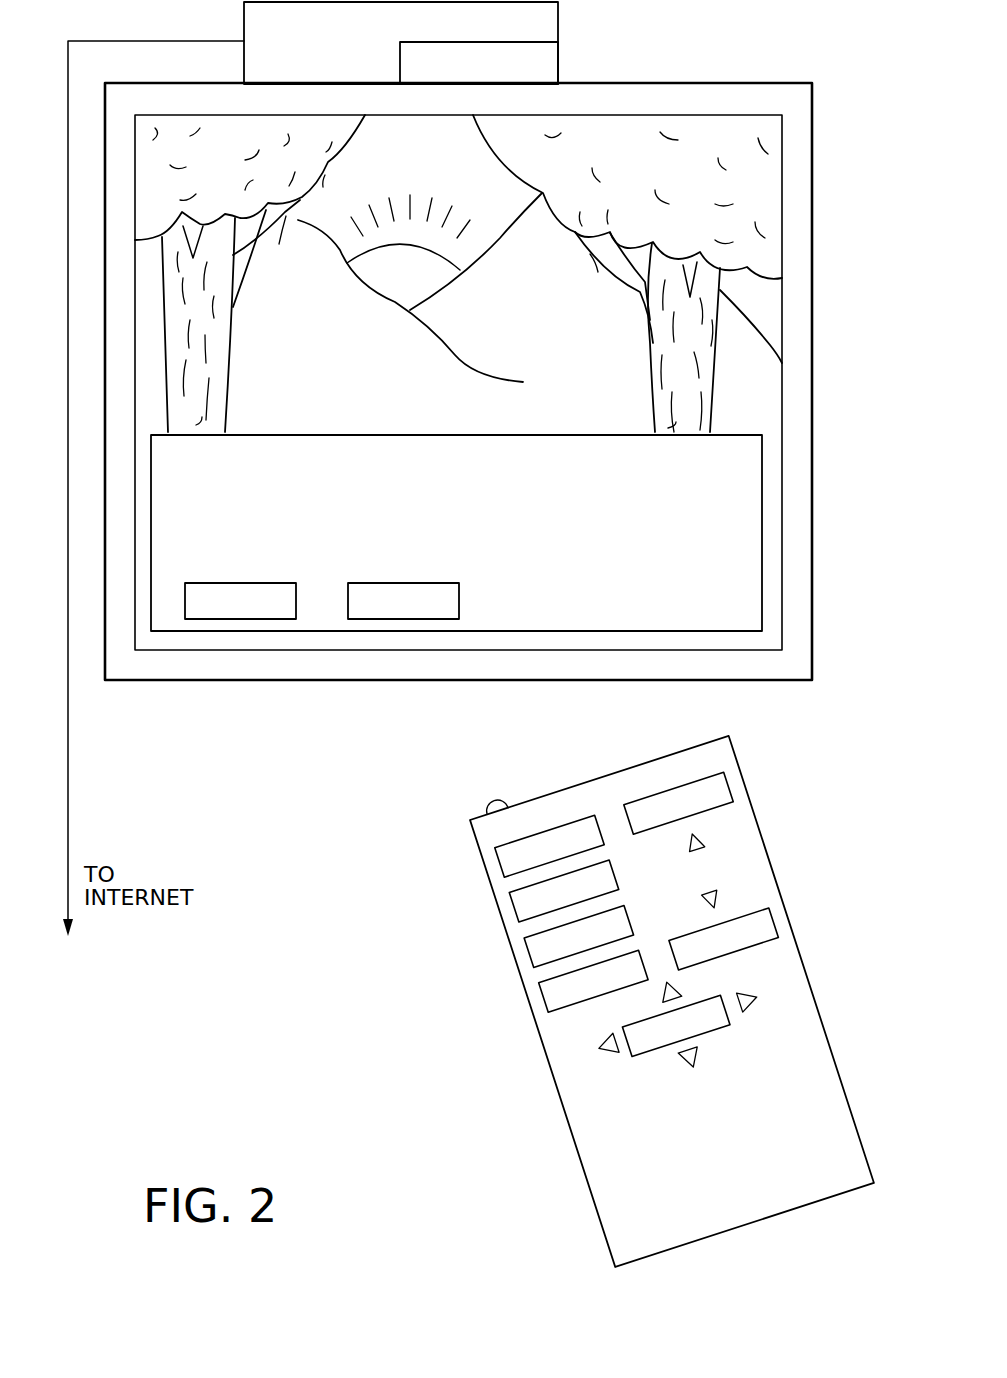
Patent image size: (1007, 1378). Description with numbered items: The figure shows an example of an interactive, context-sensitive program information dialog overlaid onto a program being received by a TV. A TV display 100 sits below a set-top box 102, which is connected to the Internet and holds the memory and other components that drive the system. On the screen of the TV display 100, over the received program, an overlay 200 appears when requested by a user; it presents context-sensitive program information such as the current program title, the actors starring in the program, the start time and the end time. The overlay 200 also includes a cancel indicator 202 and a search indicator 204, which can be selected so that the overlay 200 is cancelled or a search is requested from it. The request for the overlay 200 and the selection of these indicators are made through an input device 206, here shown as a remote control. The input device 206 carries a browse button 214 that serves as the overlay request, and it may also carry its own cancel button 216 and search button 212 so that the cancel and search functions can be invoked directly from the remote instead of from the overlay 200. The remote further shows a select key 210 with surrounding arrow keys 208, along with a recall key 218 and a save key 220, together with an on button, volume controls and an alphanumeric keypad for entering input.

The TV display 100 is at (812, 430).
The set-top box 102 is at (559, 25).
The overlay 200 is at (710, 511).
The cancel indicator 202 is at (231, 620).
The search indicator 204 is at (392, 620).
The input device 206 is at (553, 792).
The arrow keys 208 is at (680, 988).
The select key 210 is at (622, 1027).
The search button 212 is at (769, 909).
The browse button 214 is at (543, 997).
The cancel button 216 is at (528, 951).
The recall key 218 is at (514, 908).
The save key 220 is at (500, 863).